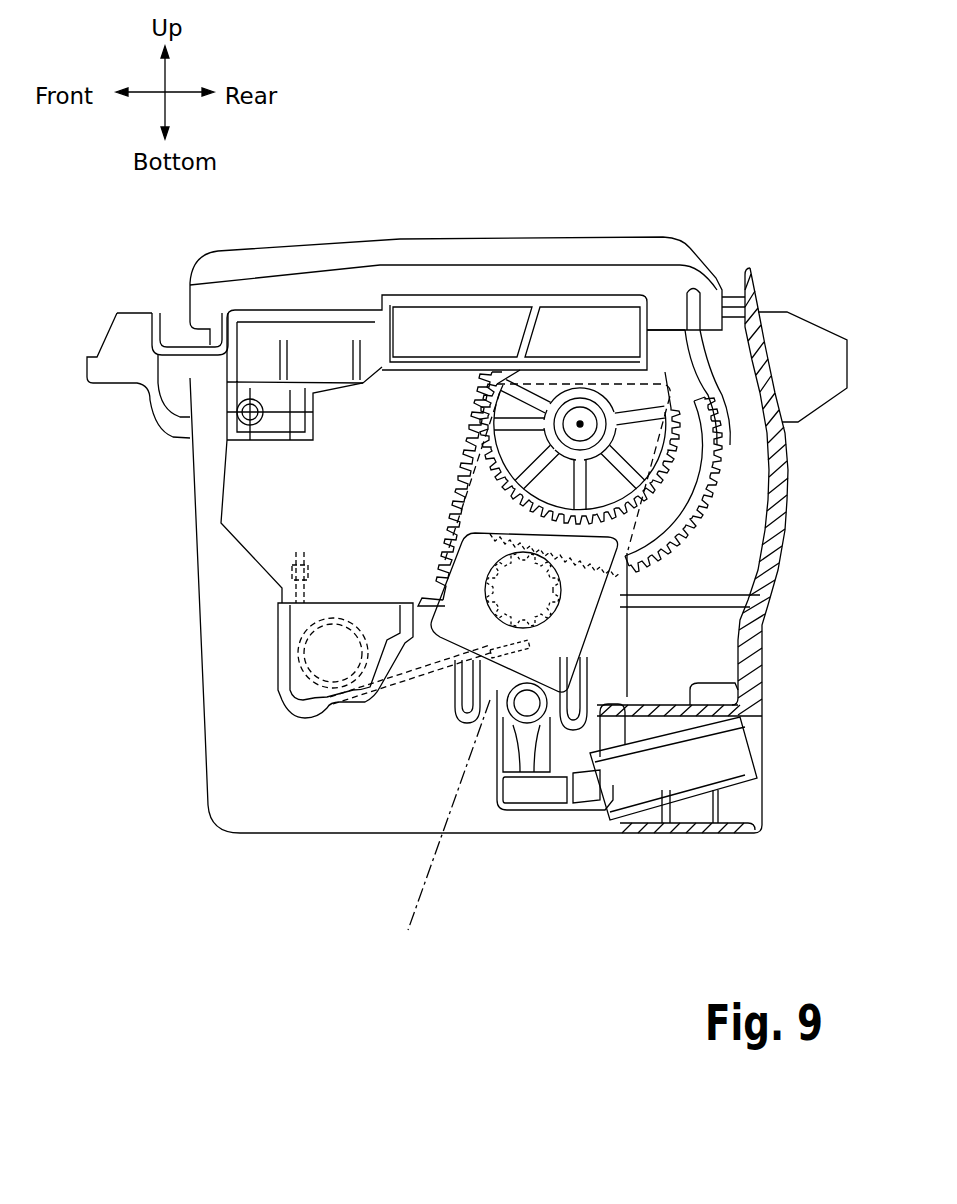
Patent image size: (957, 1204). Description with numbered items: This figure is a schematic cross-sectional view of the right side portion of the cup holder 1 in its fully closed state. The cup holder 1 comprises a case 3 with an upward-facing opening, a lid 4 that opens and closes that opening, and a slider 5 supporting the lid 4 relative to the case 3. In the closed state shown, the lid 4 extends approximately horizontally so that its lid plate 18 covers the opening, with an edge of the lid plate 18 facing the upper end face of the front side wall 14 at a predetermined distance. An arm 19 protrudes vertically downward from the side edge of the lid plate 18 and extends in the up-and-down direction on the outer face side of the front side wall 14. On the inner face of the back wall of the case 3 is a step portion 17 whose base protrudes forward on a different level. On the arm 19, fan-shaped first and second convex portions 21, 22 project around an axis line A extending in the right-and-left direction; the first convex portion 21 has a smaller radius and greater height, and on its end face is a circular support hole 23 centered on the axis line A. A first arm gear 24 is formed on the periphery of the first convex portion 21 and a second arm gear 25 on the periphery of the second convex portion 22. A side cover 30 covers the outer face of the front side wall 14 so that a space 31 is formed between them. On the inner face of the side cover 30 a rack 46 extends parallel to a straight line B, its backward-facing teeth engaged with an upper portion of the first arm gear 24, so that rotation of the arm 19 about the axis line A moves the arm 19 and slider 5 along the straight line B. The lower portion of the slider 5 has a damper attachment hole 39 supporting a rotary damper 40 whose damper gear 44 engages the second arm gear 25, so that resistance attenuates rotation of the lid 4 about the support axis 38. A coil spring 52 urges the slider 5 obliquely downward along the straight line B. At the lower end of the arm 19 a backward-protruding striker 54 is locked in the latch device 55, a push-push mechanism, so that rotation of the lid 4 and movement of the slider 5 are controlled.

The cup holder 1 is at (384, 218).
The case 3 is at (292, 840).
The lid 4 is at (251, 242).
The slider 5 is at (425, 652).
The front side wall 14 is at (222, 743).
The step portion 17 is at (740, 692).
The lid plate 18 is at (440, 250).
The arm 19 is at (462, 718).
The first convex portion 21 is at (540, 385).
The second convex portion 22 is at (740, 402).
The support hole 23 is at (582, 402).
The first arm gear 24 is at (722, 440).
The second arm gear 25 is at (715, 493).
The side cover 30 is at (247, 502).
The space 31 is at (390, 690).
The support axis 38 is at (585, 400).
The damper attachment hole 39 is at (425, 597).
The rotary damper 40 is at (553, 623).
The damper gear 44 is at (600, 598).
The rack 46 is at (452, 524).
The coil spring 52 is at (395, 597).
The striker 54 is at (530, 797).
The latch device 55 is at (640, 790).
The axis line A is at (577, 424).
The straight line B is at (648, 218).